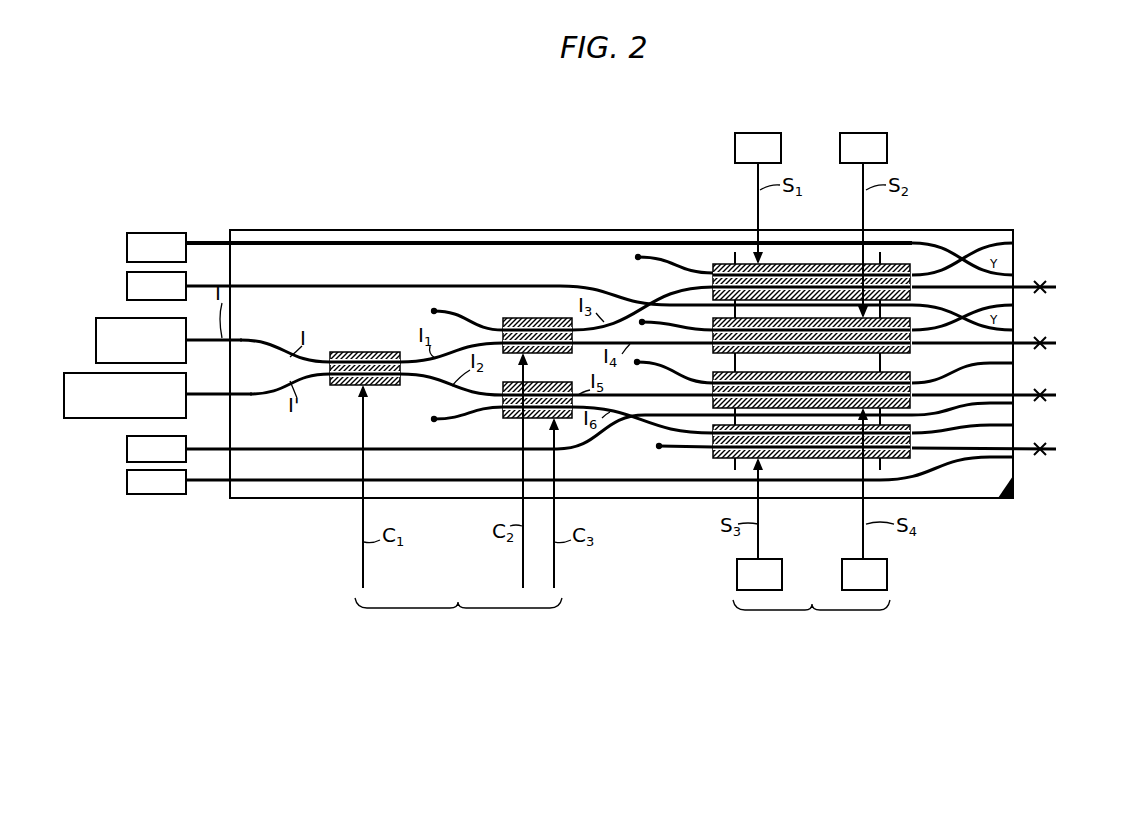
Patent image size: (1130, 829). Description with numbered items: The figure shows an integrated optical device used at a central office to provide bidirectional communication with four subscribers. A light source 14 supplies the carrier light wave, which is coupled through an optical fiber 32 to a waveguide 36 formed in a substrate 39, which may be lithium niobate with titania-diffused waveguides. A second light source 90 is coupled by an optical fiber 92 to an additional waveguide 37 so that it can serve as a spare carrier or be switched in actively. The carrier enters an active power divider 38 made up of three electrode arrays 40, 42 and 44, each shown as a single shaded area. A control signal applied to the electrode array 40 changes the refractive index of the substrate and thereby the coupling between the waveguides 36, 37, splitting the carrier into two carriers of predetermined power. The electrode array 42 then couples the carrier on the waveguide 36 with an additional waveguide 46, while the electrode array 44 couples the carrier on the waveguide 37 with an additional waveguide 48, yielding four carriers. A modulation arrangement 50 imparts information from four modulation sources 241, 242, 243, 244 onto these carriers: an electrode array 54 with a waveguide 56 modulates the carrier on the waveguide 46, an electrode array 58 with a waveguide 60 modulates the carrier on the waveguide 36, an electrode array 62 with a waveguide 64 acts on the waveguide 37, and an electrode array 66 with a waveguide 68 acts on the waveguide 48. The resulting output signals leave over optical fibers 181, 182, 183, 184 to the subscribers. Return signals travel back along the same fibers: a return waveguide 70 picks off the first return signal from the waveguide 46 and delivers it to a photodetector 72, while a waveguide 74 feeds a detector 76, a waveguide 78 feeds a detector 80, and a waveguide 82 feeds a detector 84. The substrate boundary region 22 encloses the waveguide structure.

The substrate 22 is at (485, 230).
The light source 14 is at (106, 318).
The additional light source 90 is at (78, 373).
The photodetector 72 is at (163, 233).
The detector 76 is at (127, 284).
The detector 80 is at (127, 449).
The detector 84 is at (178, 492).
The optical fiber 32 is at (203, 340).
The optical fiber 92 is at (205, 394).
The waveguide 36 is at (270, 341).
The additional waveguide 37 is at (258, 393).
The electrode array 40 is at (365, 352).
The electrode array 42 is at (521, 318).
The electrode array 44 is at (557, 385).
The additional waveguide 46 is at (447, 312).
The additional waveguide 48 is at (436, 417).
The electrode array 54 is at (722, 264).
The additional waveguide 56 is at (636, 258).
The electrode array 58 is at (712, 349).
The waveguide 60 is at (656, 307).
The electrode array 62 is at (905, 372).
The waveguide 64 is at (652, 372).
The electrode array 66 is at (712, 453).
The waveguide 68 is at (660, 447).
The return waveguide 70 is at (932, 244).
The waveguide 74 is at (502, 286).
The waveguide 78 is at (968, 403).
The waveguide 82 is at (998, 462).
The substrate 39 is at (1010, 499).
The optical fiber 181 is at (1020, 284).
The optical fiber 182 is at (1020, 340).
The optical fiber 183 is at (1020, 392).
The optical fiber 184 is at (1020, 446).
The modulation/information source 241 is at (775, 133).
The modulation/information source 242 is at (882, 133).
The modulation/information source 243 is at (783, 570).
The modulation/information source 244 is at (888, 570).
The active power divider 38 is at (458, 628).
The modulation arrangement 50 is at (811, 640).